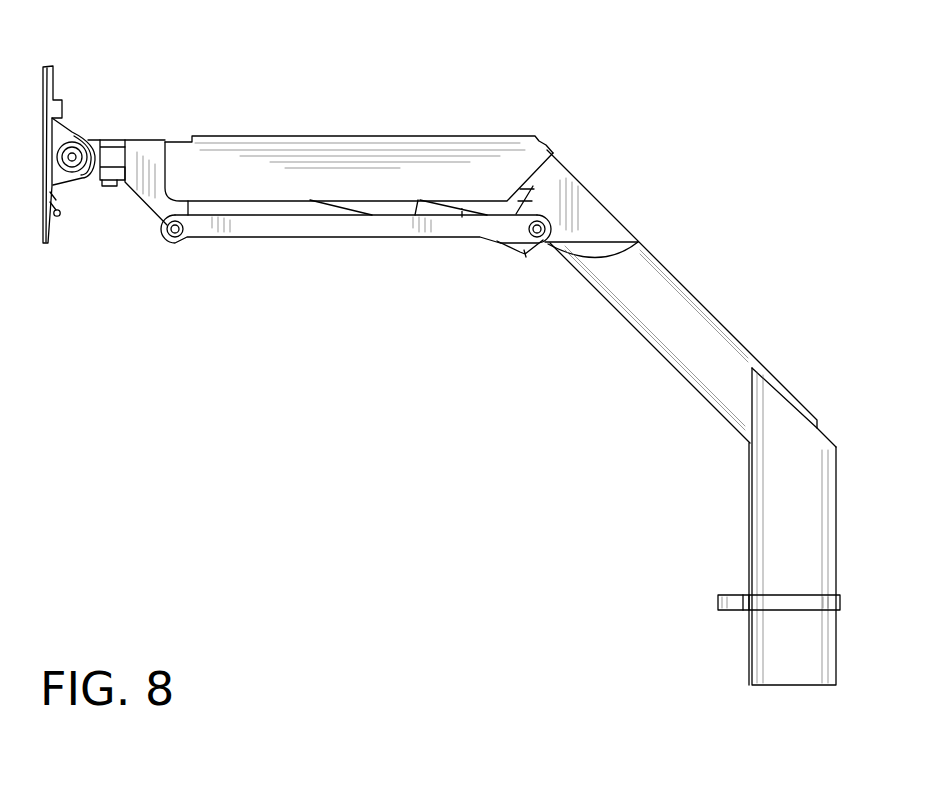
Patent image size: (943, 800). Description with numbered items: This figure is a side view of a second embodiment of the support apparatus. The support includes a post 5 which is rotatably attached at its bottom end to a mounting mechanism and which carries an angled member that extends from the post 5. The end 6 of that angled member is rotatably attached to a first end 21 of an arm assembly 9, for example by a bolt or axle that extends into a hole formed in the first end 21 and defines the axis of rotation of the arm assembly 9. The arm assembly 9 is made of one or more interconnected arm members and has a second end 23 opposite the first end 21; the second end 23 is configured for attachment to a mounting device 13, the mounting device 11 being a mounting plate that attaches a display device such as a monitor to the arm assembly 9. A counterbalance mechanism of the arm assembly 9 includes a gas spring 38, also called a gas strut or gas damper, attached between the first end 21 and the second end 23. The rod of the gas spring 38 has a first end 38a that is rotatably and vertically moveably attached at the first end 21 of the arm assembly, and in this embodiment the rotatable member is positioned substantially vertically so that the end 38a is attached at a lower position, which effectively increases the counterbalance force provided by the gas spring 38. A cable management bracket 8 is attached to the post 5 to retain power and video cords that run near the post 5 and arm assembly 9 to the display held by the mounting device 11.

The mounting device 11 is at (57, 80).
The mounting device 13 is at (58, 215).
The second end of the arm assembly 23 is at (135, 147).
The arm assembly 9 is at (303, 138).
The gas spring 38 is at (380, 208).
The first end of the gas spring 38a is at (527, 253).
The end of the angled member 6 is at (500, 286).
The first end of the arm assembly 21 is at (575, 193).
The post 5 is at (767, 530).
The cable management bracket 8 is at (718, 608).